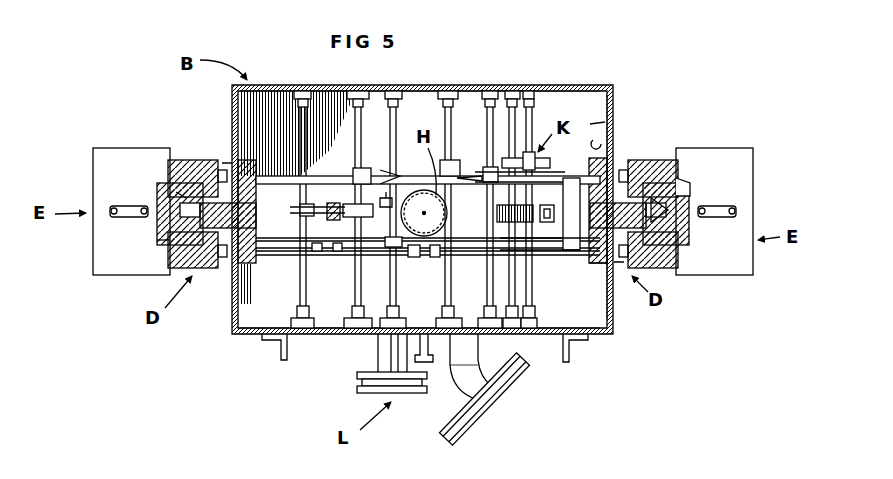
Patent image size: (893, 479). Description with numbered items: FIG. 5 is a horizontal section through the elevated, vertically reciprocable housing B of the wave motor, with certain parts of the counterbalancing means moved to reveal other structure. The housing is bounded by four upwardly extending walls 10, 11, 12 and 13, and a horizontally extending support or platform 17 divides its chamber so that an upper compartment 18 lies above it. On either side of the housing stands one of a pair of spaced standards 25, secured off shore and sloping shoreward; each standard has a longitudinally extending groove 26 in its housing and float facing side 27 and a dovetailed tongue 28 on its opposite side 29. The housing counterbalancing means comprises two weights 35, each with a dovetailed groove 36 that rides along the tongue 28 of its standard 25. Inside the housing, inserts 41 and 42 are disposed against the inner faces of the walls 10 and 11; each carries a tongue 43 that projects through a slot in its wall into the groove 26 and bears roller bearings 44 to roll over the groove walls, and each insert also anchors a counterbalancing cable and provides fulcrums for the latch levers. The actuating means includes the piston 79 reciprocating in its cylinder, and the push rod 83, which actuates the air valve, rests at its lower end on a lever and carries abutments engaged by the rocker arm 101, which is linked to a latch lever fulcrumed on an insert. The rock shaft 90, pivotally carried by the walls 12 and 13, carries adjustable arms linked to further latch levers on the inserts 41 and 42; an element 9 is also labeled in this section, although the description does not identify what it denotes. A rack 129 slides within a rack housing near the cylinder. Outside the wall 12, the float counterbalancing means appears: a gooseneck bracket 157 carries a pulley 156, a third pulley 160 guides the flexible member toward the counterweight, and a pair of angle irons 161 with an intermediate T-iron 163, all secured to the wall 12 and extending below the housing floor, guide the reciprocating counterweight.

The shaft 9 is at (437, 286).
The housing wall 10 is at (232, 103).
The housing wall 11 is at (614, 103).
The housing wall 12 is at (255, 338).
The housing wall 13 is at (556, 87).
The support or platform 17 is at (593, 127).
The upper compartment 18 is at (600, 145).
The standard 25 is at (210, 268).
The groove 26 is at (182, 192).
The housing and float facing side 27 is at (222, 163).
The dovetailed tongue 28 is at (688, 184).
The opposite side 29 is at (164, 168).
The weight 35 is at (113, 280).
The dovetailed groove 36 is at (177, 235).
The insert 41 is at (256, 257).
The insert 42 is at (596, 264).
The tongue 43 is at (256, 218).
The roller bearings 44 is at (198, 195).
The piston 79 is at (428, 211).
The push rod 83 is at (334, 222).
The rock shaft 90 is at (398, 283).
The rocker arm 101 is at (292, 208).
The rack 129 is at (548, 205).
The pulley 156 is at (495, 404).
The gooseneck bracket 157 is at (477, 381).
The third pulley 160 is at (358, 384).
The angle irons 161 is at (292, 354).
The T-iron 163 is at (431, 352).